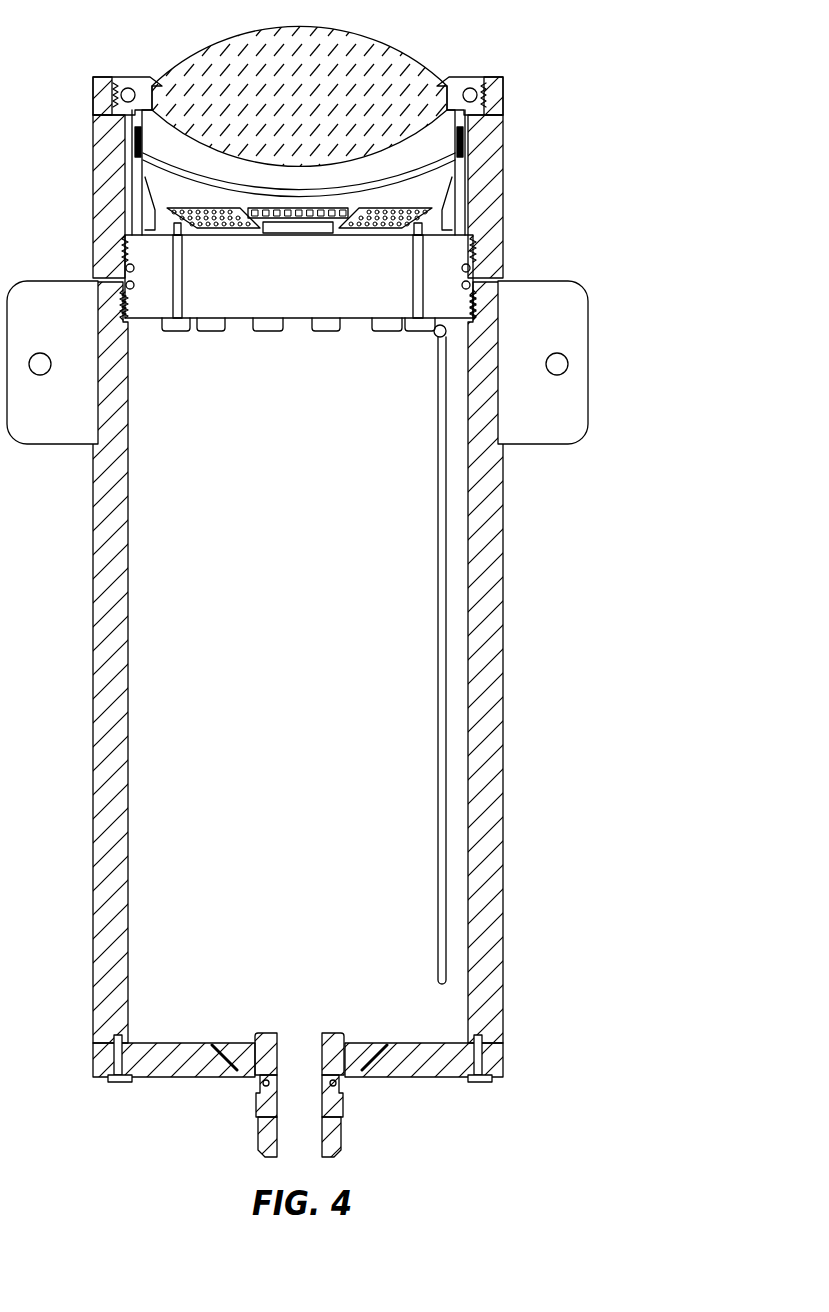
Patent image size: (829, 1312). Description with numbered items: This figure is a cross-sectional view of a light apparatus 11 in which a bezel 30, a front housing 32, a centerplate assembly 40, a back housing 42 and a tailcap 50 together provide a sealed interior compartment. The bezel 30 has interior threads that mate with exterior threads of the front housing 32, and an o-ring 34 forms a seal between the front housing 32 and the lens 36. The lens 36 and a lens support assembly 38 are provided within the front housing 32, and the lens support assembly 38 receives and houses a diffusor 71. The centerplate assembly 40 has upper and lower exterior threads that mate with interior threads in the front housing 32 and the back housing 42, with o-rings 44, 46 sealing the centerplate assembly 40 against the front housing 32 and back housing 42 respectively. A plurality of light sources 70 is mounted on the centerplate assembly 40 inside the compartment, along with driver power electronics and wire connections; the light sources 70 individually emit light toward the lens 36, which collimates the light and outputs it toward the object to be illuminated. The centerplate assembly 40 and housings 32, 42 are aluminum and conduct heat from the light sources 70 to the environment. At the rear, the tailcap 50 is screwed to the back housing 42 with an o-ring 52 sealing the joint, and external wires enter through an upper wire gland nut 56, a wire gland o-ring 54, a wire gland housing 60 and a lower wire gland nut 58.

The light fixture assembly 11 is at (339, 584).
The bezel 30 is at (501, 95).
The front housing 32 is at (489, 158).
The o-ring 34 is at (476, 88).
The lens 36 is at (338, 32).
The lens support assembly 38 is at (458, 198).
The centerplate assembly 40 is at (452, 256).
The back housing 42 is at (500, 540).
The o-ring 44 is at (461, 267).
The o-ring 46 is at (461, 286).
The tailcap 50 is at (437, 1068).
The o-ring 52 is at (464, 1041).
The wire gland o-ring 54 is at (258, 1093).
The upper wire gland nut 56 is at (258, 1050).
The lower wire gland nut 58 is at (330, 1140).
The wire gland housing 60 is at (344, 1113).
The light sources 70 is at (368, 222).
The diffusor 71 is at (153, 171).